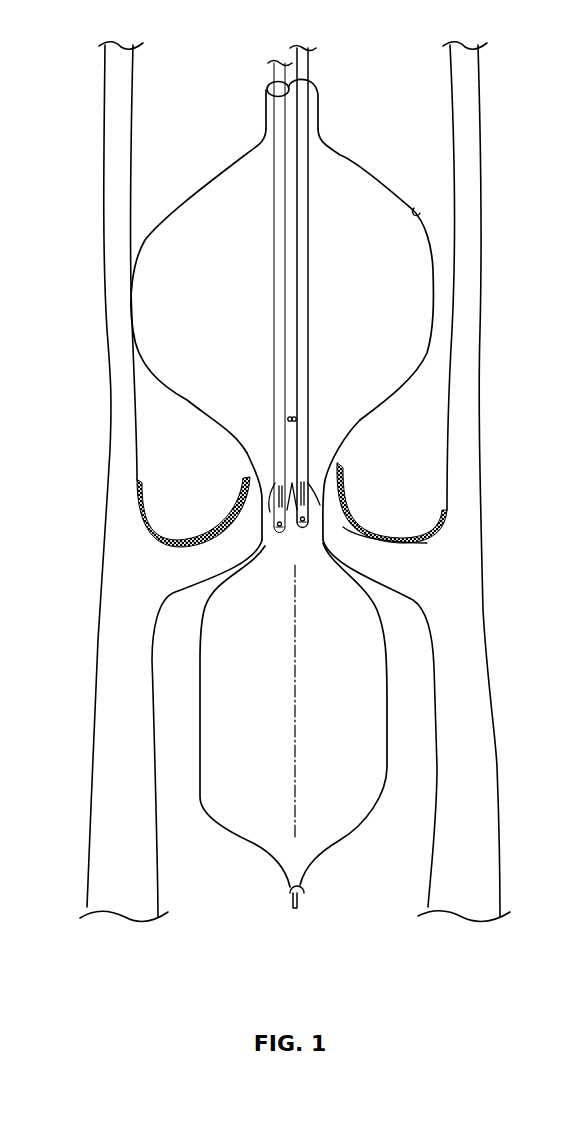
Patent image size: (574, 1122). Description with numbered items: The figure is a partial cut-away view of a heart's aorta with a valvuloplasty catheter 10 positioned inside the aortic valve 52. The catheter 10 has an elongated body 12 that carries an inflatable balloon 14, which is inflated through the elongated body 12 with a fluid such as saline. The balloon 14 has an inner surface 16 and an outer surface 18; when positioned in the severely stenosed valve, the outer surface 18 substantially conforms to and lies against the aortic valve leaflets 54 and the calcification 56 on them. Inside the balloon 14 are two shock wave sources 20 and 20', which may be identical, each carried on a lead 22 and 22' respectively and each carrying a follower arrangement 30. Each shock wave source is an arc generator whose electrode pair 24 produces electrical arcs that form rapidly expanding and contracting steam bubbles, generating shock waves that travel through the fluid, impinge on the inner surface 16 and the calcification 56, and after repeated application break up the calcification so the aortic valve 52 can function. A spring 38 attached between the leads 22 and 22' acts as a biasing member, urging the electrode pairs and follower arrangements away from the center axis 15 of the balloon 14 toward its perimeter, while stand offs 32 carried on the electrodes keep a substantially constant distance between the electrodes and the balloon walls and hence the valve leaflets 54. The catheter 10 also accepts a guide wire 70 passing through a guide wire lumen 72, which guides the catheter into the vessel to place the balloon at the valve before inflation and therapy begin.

The catheter 10 is at (359, 139).
The elongated body 12 is at (318, 98).
The inflatable balloon 14 is at (377, 165).
The center axis 15 is at (297, 733).
The inner surface 16 is at (418, 208).
The outer surface 18 is at (433, 260).
The shock wave source 20 is at (393, 442).
The shock wave source 20' is at (160, 467).
The lead 22 is at (329, 287).
The lead 22' is at (253, 297).
The electrode pair 24 is at (302, 533).
The follower arrangement 30 is at (318, 512).
The stand offs 32 is at (320, 490).
The spring 38 is at (293, 417).
The aortic valve 52 is at (351, 459).
The aortic valve leaflets 54 is at (337, 468).
The calcification 56 is at (413, 550).
The guide wire 70 is at (300, 902).
The guide wire lumen 72 is at (288, 903).